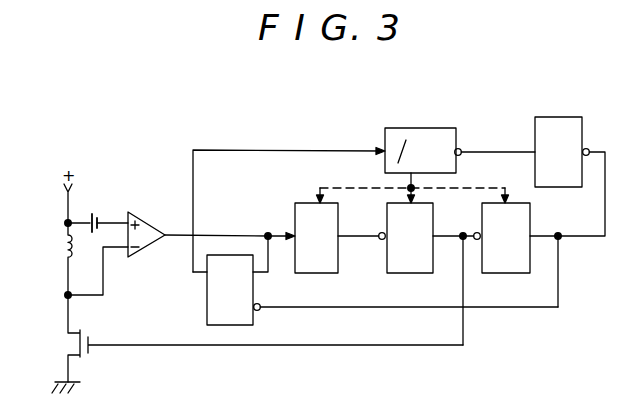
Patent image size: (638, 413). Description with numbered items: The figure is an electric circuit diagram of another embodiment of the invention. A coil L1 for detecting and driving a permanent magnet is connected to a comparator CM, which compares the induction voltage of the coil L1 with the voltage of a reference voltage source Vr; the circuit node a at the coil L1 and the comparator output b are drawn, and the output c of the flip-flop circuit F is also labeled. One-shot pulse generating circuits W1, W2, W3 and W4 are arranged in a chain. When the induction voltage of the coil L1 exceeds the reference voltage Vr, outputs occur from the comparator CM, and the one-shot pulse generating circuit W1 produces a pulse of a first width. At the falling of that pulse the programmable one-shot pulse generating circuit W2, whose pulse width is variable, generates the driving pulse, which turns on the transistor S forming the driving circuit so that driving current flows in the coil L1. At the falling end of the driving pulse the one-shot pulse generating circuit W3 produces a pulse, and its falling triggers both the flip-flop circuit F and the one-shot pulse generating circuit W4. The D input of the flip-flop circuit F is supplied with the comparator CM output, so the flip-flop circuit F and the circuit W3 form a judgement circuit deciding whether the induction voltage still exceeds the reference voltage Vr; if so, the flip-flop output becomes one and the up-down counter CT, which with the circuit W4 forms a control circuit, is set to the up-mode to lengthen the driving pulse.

The coil L1 is at (63, 241).
The reference voltage source Vr is at (94, 212).
The comparator CM is at (148, 222).
The node a is at (62, 295).
The comparator output b is at (226, 234).
The flip-flop output c is at (192, 270).
The flip-flop circuit F is at (207, 322).
The transistor S is at (66, 346).
The up-down counter CT is at (419, 133).
The one-shot pulse generating circuit W1 is at (313, 273).
The one-shot pulse generating circuit W2 is at (406, 273).
The one-shot pulse generating circuit W3 is at (500, 273).
The one-shot pulse generating circuit W4 is at (554, 128).